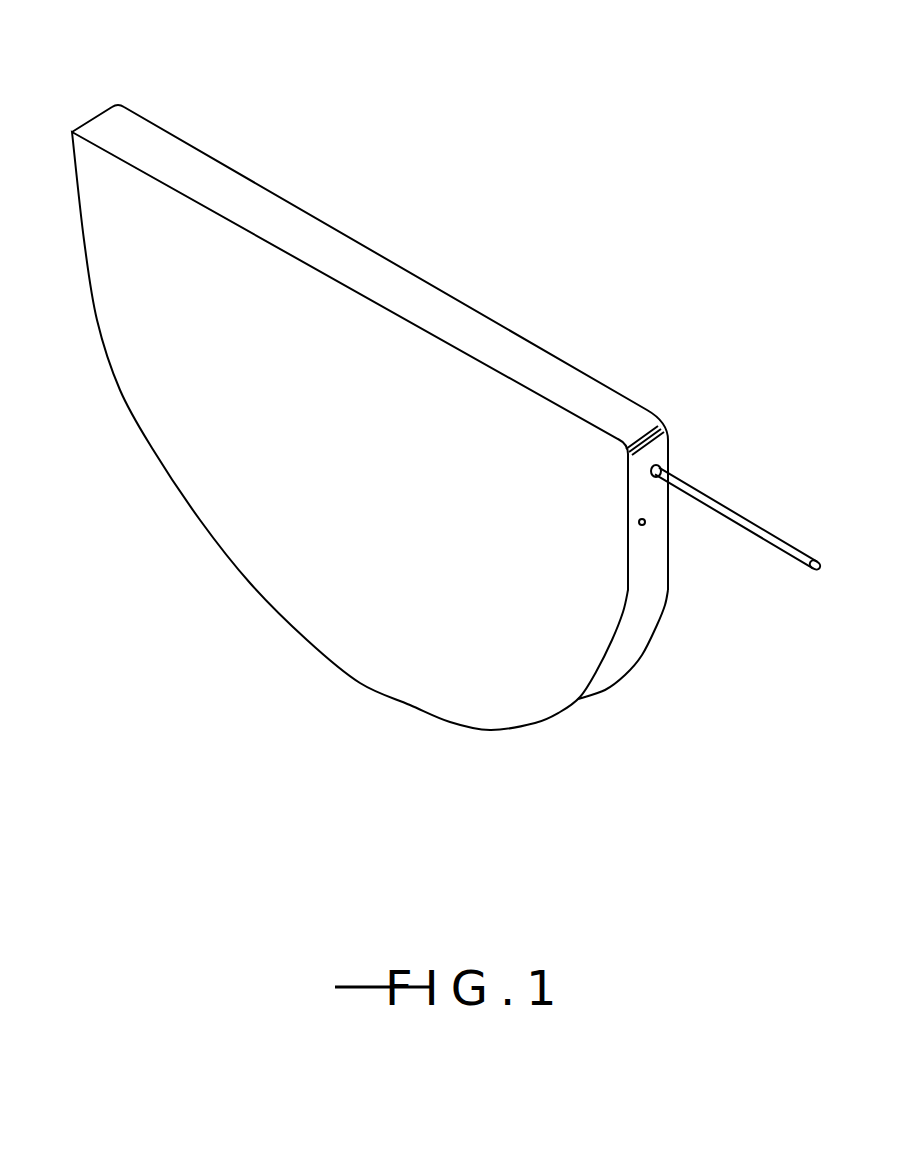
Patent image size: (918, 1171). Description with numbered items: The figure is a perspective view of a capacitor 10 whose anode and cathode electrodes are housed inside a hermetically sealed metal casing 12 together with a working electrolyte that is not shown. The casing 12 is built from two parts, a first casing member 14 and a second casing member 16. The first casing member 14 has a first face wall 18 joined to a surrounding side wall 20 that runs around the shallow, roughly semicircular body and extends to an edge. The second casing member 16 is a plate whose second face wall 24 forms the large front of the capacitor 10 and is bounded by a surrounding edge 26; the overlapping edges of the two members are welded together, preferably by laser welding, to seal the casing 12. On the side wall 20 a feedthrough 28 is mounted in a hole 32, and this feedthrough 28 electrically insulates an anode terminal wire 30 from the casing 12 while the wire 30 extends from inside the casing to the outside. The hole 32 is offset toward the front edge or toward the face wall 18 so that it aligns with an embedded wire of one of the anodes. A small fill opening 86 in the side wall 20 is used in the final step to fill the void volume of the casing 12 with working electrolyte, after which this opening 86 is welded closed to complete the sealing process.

The capacitor 10 is at (436, 378).
The casing 12 is at (418, 378).
The first casing member 14 is at (507, 325).
The second casing member 16 is at (150, 450).
The first face wall 18 is at (277, 193).
The surrounding side wall 20 is at (540, 375).
The second face wall 24 is at (323, 620).
The surrounding edge 26 is at (270, 247).
The feedthrough 28 is at (688, 463).
The anode terminal wire 30 is at (780, 537).
The hole 32 is at (668, 427).
The fill opening 86 is at (646, 521).